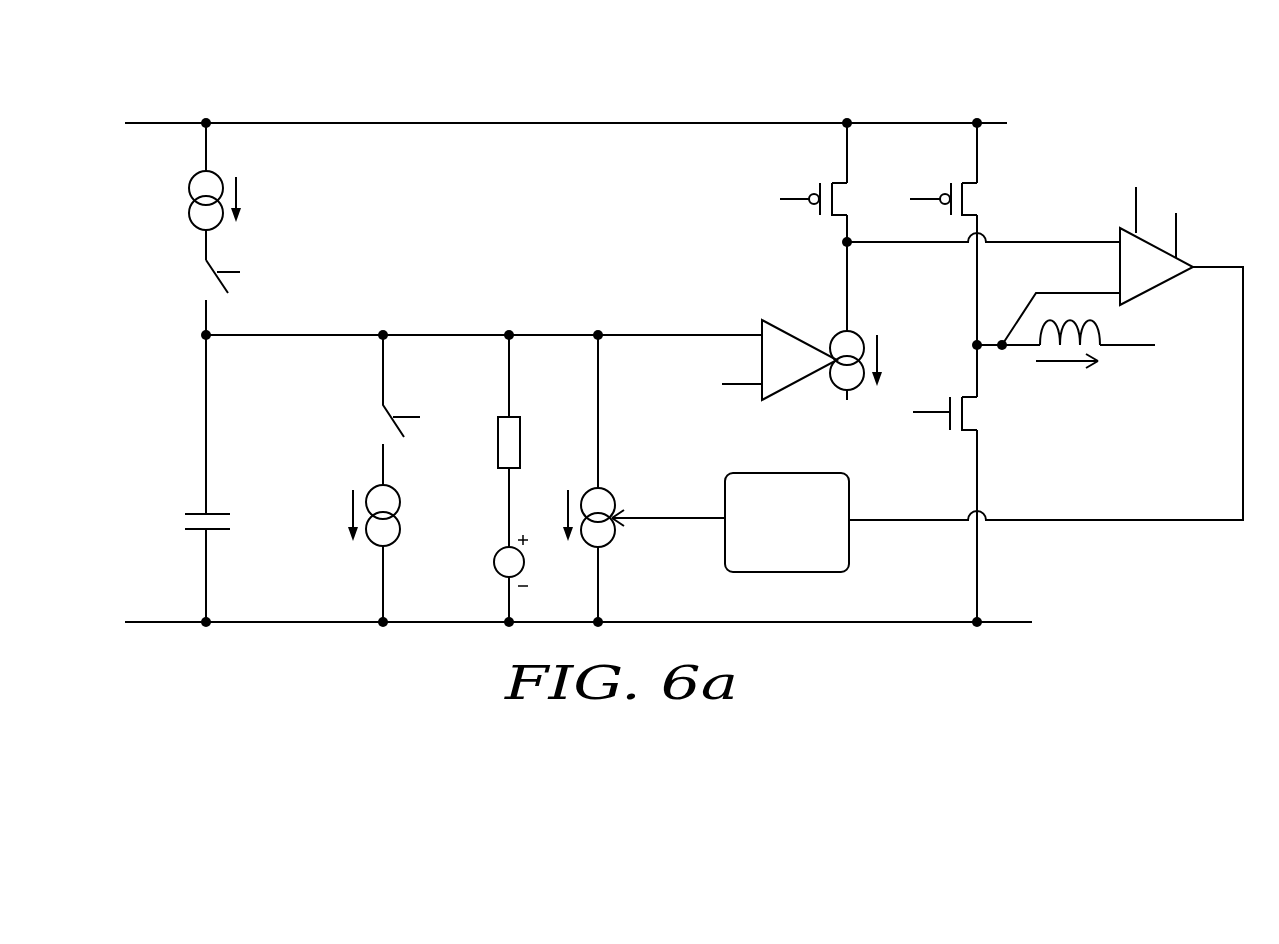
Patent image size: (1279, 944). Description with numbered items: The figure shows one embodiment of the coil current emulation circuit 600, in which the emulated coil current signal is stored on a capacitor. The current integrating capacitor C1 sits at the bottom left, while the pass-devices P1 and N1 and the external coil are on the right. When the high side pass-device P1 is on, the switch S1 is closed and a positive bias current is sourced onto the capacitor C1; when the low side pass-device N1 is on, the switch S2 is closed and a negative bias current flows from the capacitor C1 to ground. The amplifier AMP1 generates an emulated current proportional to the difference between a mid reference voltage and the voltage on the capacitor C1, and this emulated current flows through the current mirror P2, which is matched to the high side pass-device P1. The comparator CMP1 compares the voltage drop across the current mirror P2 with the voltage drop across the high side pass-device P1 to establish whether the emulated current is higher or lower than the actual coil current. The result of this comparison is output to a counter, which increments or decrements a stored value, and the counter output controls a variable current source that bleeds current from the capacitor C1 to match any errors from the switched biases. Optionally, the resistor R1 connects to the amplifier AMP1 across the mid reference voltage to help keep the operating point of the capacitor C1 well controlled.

The coil current emulation circuit 600 is at (365, 52).
The switch S1 is at (208, 297).
The switch S2 is at (387, 410).
The current integrating capacitor C1 is at (192, 478).
The resistor R1 is at (524, 441).
The high side pass-device P1 is at (958, 234).
The current mirror P2 is at (828, 182).
The low side pass-device N1 is at (953, 483).
The amplifier AMP1 is at (799, 360).
The comparator CMP1 is at (1156, 246).